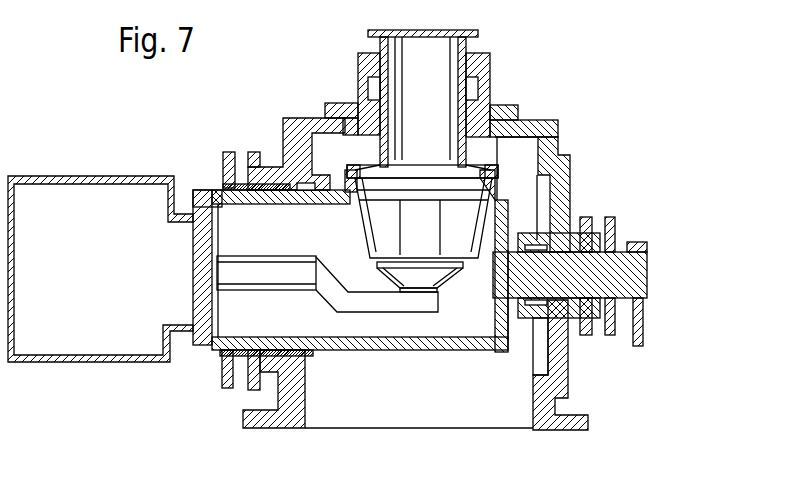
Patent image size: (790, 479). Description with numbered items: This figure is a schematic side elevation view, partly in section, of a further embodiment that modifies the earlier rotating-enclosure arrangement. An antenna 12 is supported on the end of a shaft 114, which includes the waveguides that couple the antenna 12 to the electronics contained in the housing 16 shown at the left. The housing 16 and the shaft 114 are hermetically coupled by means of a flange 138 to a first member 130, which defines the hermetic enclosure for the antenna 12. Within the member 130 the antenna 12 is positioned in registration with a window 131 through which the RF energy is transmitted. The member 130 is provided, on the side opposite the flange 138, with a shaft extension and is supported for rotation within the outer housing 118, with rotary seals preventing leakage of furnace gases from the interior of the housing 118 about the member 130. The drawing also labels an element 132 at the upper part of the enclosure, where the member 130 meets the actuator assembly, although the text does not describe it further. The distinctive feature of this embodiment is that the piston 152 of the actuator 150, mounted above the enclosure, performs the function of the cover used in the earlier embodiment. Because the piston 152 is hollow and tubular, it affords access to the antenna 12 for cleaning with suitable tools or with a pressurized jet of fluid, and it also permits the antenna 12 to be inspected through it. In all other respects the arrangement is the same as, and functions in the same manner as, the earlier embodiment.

The housing 16 is at (103, 362).
The flange 138 is at (200, 193).
The mounting body 132 is at (345, 195).
The piston 152 is at (357, 85).
The actuator 150 is at (497, 53).
The window 131 is at (500, 203).
The antenna 12 is at (440, 270).
The shaft 114 is at (265, 268).
The first member 130 is at (372, 350).
The housing 118 is at (502, 430).